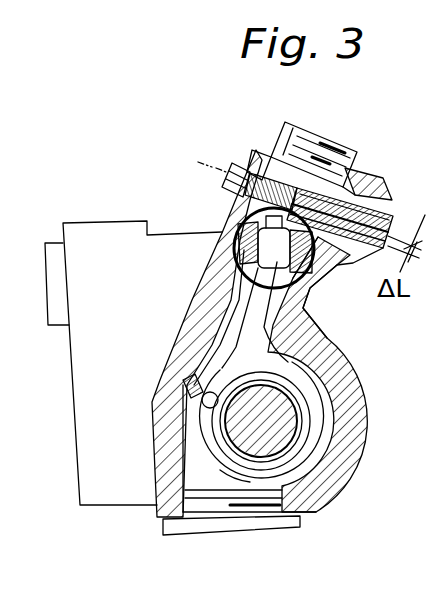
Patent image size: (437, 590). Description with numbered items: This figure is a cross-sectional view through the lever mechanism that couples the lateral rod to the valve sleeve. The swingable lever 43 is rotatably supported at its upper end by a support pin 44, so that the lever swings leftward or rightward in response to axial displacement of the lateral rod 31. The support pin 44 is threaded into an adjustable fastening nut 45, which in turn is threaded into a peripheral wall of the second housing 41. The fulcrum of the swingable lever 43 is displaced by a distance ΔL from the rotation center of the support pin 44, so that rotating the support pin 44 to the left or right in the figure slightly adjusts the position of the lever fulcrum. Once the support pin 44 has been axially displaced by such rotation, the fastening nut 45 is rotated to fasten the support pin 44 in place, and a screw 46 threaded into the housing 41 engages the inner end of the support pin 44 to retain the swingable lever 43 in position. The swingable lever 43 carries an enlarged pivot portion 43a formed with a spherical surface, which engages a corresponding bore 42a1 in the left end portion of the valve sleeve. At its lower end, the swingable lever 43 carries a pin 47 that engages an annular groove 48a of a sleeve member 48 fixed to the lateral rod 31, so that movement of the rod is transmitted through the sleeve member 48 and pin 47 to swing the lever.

The lateral rod 31 is at (277, 433).
The second housing 41 is at (343, 353).
The bore 42a1 is at (252, 273).
The swingable lever 43 is at (257, 300).
The enlarged pivot portion 43a is at (303, 272).
The support pin 44 is at (398, 230).
The adjustable fastening nut 45 is at (377, 190).
The screw 46 is at (240, 162).
The pin 47 is at (201, 409).
The sleeve member 48 is at (203, 453).
The annular groove 48a is at (220, 462).